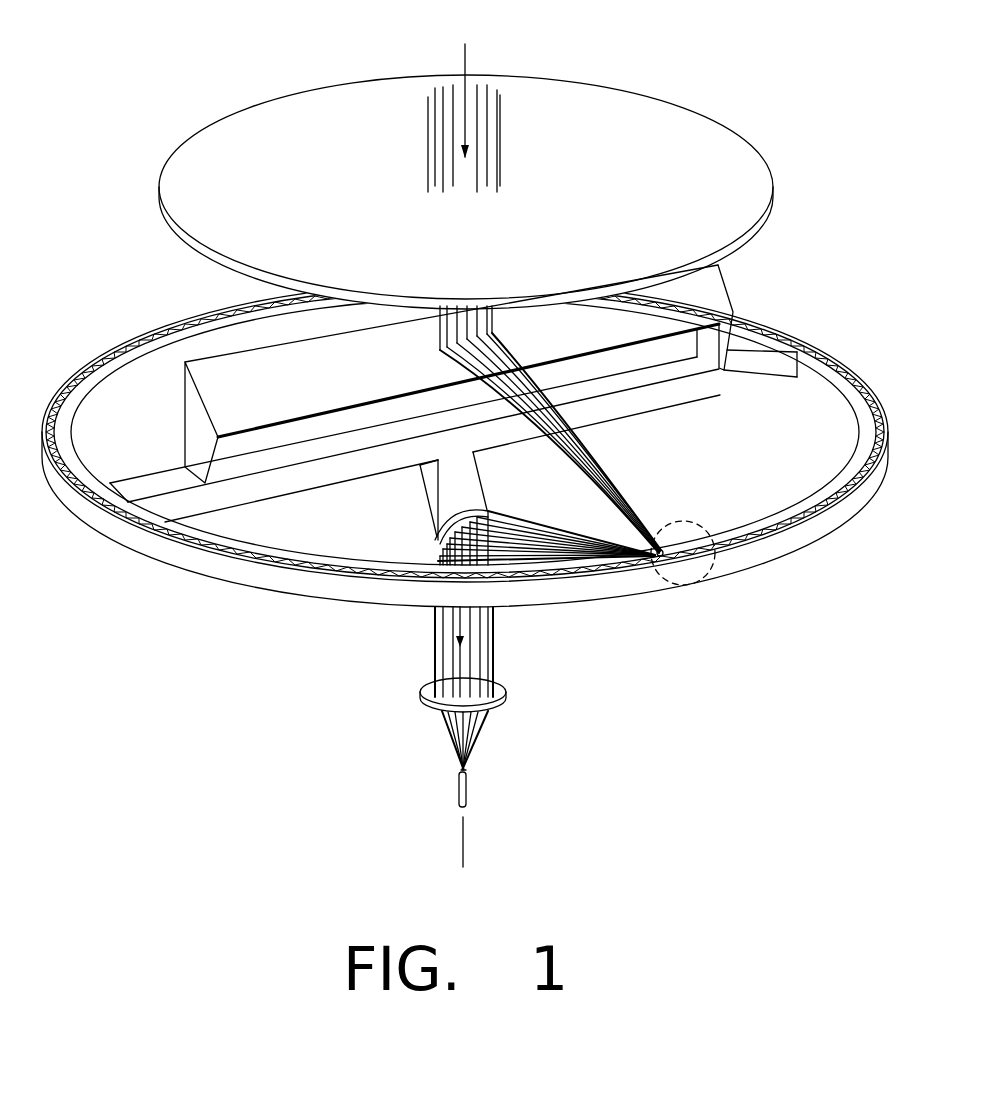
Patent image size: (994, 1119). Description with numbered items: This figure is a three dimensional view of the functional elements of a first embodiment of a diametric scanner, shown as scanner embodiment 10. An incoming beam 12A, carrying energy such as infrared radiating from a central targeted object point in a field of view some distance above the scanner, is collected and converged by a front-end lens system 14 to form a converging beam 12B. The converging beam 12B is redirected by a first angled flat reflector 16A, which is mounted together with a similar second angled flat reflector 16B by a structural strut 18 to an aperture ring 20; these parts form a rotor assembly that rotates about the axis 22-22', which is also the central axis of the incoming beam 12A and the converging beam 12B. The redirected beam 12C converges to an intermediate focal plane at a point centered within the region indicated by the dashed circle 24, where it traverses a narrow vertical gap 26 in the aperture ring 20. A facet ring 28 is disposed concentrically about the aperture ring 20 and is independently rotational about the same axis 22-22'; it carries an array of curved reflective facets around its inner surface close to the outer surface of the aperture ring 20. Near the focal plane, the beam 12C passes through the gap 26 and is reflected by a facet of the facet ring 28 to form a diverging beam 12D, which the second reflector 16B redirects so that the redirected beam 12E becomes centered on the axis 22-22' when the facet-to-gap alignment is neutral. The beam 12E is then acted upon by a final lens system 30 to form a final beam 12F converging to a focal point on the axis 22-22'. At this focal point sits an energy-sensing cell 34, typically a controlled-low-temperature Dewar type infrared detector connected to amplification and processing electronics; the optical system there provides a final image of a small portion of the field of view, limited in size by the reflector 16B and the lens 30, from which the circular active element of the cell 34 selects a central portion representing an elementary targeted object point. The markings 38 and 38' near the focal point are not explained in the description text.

The scanner embodiment 10 is at (95, 297).
The incoming beam 12A is at (496, 88).
The converging beam 12B is at (443, 315).
The redirected beam 12C is at (615, 480).
The diverging beam 12D is at (488, 511).
The redirected beam 12E is at (435, 622).
The final beam 12F is at (447, 735).
The front-end lens system 14 is at (748, 242).
The first angled flat reflector 16A is at (227, 392).
The second angled flat reflector 16B is at (437, 541).
The structural strut 18 is at (175, 480).
The aperture ring 20 is at (848, 470).
The axis 22 is at (464, 87).
The axis 22' is at (464, 858).
The dashed circle 24 is at (657, 583).
The narrow vertical gap 26 is at (683, 545).
The facet ring 28 is at (743, 557).
The final lens system 30 is at (507, 693).
The energy-sensing cell 34 is at (468, 790).
The focal point 38 is at (410, 790).
The focal plane 38' is at (517, 756).